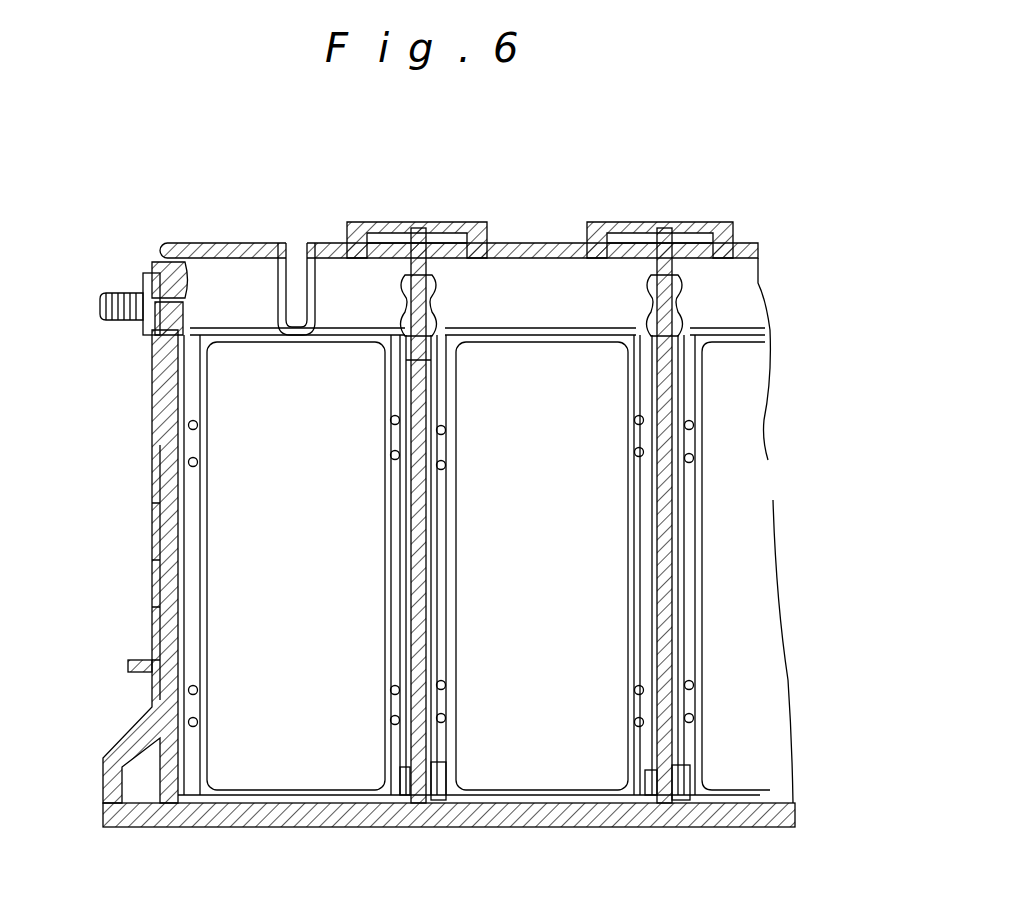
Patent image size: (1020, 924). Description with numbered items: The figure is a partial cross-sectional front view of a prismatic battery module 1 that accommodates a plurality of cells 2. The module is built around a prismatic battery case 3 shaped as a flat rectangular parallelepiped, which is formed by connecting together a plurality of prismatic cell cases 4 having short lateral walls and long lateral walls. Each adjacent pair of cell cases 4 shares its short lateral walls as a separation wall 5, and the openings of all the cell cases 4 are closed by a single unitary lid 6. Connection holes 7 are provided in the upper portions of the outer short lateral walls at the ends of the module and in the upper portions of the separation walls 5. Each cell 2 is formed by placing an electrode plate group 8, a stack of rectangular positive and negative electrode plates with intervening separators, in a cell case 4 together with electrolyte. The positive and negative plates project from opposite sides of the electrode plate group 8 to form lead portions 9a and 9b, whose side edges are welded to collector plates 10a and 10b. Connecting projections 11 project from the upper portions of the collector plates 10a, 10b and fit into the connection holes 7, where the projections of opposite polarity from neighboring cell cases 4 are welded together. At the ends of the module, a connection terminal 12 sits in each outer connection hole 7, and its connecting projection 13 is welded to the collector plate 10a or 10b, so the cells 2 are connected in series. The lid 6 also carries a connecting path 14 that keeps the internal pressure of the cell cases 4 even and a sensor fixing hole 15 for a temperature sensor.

The prismatic battery module 1 is at (162, 215).
The cell 2 is at (193, 806).
The prismatic battery case 3 is at (150, 540).
The prismatic cell case 4 is at (262, 321).
The separation wall 5 is at (428, 388).
The lid 6 is at (221, 243).
The connection hole 7 is at (160, 330).
The electrode plate group 8 is at (300, 512).
The lead portion 9a is at (190, 562).
The lead portion 9b is at (398, 520).
The collector plate 10a is at (432, 545).
The collector plate 10b is at (410, 560).
The connecting projection 11 is at (182, 304).
The connection terminal 12 is at (150, 293).
The connecting projection 13 is at (150, 312).
The connecting path 14 is at (390, 222).
The sensor fixing hole 15 is at (298, 268).